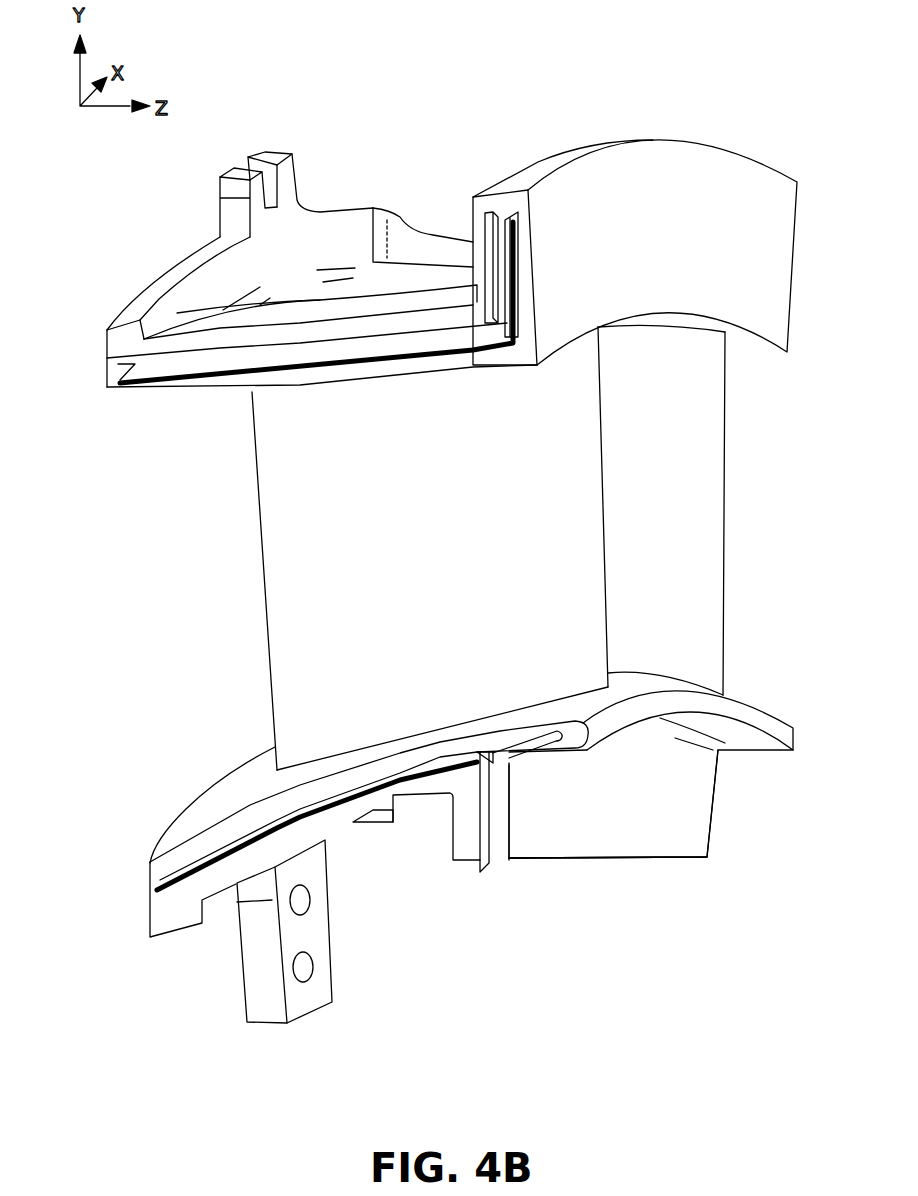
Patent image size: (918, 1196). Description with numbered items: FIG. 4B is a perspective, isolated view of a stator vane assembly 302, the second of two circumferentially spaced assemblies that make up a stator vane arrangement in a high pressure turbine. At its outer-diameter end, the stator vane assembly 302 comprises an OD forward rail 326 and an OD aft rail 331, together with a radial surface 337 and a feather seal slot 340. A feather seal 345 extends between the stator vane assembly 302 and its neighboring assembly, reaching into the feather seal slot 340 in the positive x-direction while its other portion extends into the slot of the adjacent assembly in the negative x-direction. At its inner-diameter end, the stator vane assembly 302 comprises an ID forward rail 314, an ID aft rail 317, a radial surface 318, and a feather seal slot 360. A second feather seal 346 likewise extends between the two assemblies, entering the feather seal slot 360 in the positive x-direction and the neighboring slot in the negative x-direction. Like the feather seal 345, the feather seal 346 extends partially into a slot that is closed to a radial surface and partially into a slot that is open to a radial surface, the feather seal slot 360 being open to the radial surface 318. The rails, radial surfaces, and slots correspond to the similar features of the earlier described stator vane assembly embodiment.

The stator vane assembly 302 is at (740, 85).
The ID forward rail 314 is at (162, 938).
The ID aft rail 317 is at (693, 830).
The radial surface 318 is at (638, 853).
The OD forward rail 326 is at (134, 299).
The OD aft rail 331 is at (695, 199).
The radial surface 337 is at (540, 162).
The feather seal slot 340 is at (117, 372).
The feather seal 345 is at (187, 382).
The feather seal 346 is at (482, 815).
The feather seal slot 360 is at (163, 878).